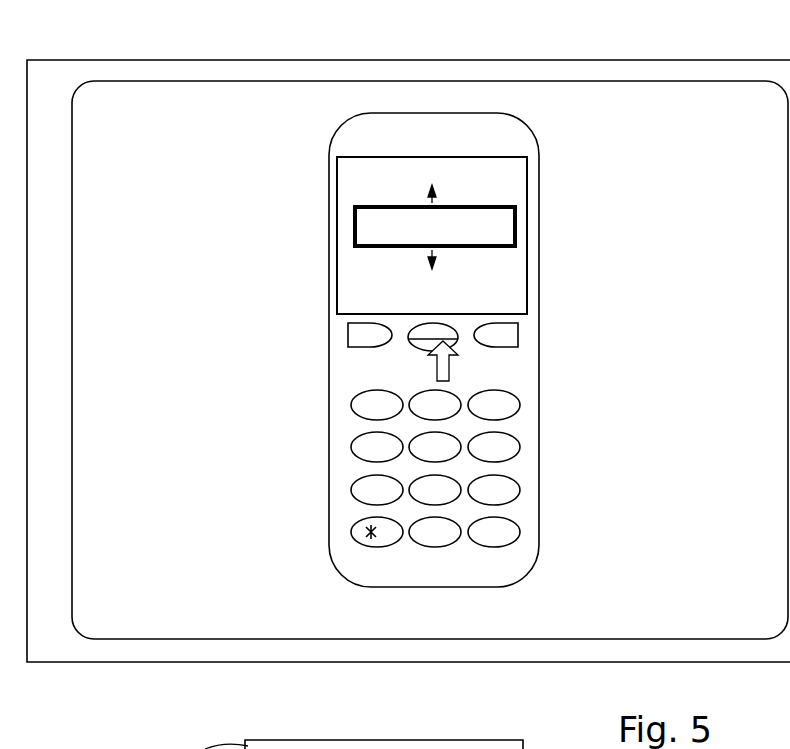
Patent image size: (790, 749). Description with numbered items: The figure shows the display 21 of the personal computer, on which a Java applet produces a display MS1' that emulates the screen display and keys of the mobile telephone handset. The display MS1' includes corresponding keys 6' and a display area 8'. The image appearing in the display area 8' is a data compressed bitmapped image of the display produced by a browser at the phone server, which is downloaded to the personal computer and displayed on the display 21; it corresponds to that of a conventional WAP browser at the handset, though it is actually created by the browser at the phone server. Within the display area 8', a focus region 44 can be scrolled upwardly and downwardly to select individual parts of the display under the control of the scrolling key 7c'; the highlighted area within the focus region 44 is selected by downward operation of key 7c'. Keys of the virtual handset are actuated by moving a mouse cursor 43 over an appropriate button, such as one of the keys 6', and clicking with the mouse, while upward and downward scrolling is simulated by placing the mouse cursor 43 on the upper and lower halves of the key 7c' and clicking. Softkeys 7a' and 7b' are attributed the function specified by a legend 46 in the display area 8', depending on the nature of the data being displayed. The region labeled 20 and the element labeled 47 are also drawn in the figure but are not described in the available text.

The display 21 is at (527, 93).
The display MS1' is at (487, 350).
The display area 8' is at (432, 220).
The focus region 44 is at (515, 219).
The left function legend 20 is at (350, 309).
The legend 46 is at (518, 313).
The softkey 7a' is at (362, 348).
The scrolling key 7c' is at (422, 348).
The softkey 7b' is at (506, 346).
The mouse cursor 43 is at (449, 372).
The keys 6' is at (477, 468).
The second display element 47 is at (322, 748).